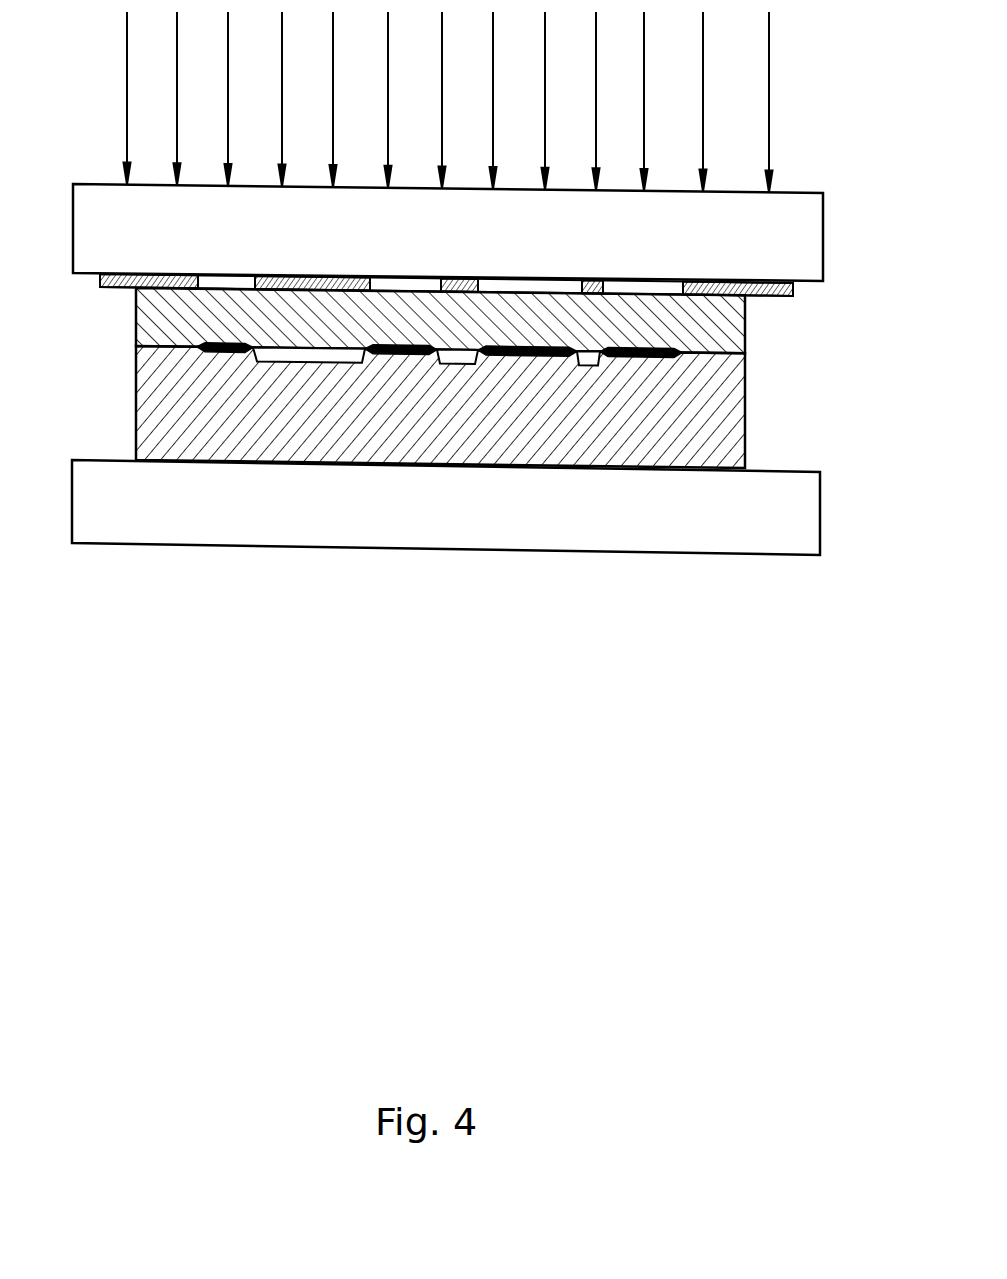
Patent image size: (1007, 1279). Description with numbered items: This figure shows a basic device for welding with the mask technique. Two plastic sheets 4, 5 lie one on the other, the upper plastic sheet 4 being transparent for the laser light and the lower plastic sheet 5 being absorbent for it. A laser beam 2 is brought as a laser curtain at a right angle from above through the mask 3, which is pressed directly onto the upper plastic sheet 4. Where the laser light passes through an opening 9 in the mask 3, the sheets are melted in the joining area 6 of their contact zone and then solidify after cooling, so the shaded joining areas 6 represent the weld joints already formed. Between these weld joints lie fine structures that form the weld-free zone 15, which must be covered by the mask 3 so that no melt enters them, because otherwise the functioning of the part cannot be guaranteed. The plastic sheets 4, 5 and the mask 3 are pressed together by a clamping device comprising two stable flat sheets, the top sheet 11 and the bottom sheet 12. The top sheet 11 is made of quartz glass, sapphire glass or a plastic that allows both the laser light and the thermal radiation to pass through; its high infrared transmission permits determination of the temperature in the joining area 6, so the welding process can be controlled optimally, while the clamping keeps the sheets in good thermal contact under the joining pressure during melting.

The laser beam 2 is at (738, 61).
The top sheet 11 is at (790, 233).
The mask 3 is at (793, 287).
The opening 9 is at (218, 278).
The plastic sheet 4 is at (727, 323).
The plastic sheet 5 is at (712, 415).
The joining area 6 is at (197, 347).
The weld-free zone 15 is at (295, 357).
The bottom sheet 12 is at (793, 522).